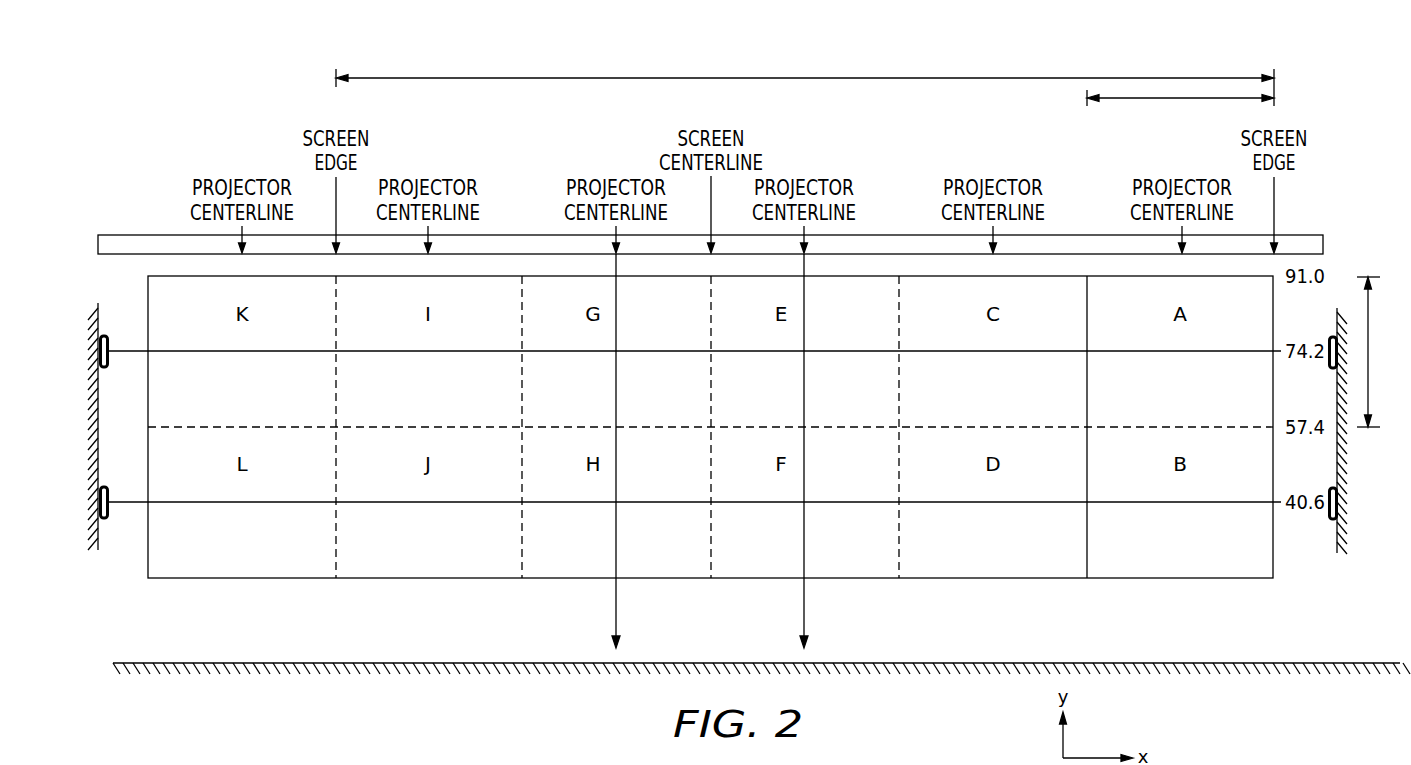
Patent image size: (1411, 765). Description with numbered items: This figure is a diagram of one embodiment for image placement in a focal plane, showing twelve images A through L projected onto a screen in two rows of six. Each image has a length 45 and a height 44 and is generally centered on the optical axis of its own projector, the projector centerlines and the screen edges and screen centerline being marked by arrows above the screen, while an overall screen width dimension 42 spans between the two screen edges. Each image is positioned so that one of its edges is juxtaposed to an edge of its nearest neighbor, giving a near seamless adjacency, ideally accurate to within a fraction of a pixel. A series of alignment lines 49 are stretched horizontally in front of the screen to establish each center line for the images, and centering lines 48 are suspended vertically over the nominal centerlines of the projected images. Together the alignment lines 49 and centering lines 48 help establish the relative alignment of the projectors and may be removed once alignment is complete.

The screen width dimension 42 is at (458, 78).
The height 44 is at (1368, 306).
The length 45 is at (1127, 99).
The centering lines 48 is at (617, 612).
The alignment lines 49 is at (163, 352).